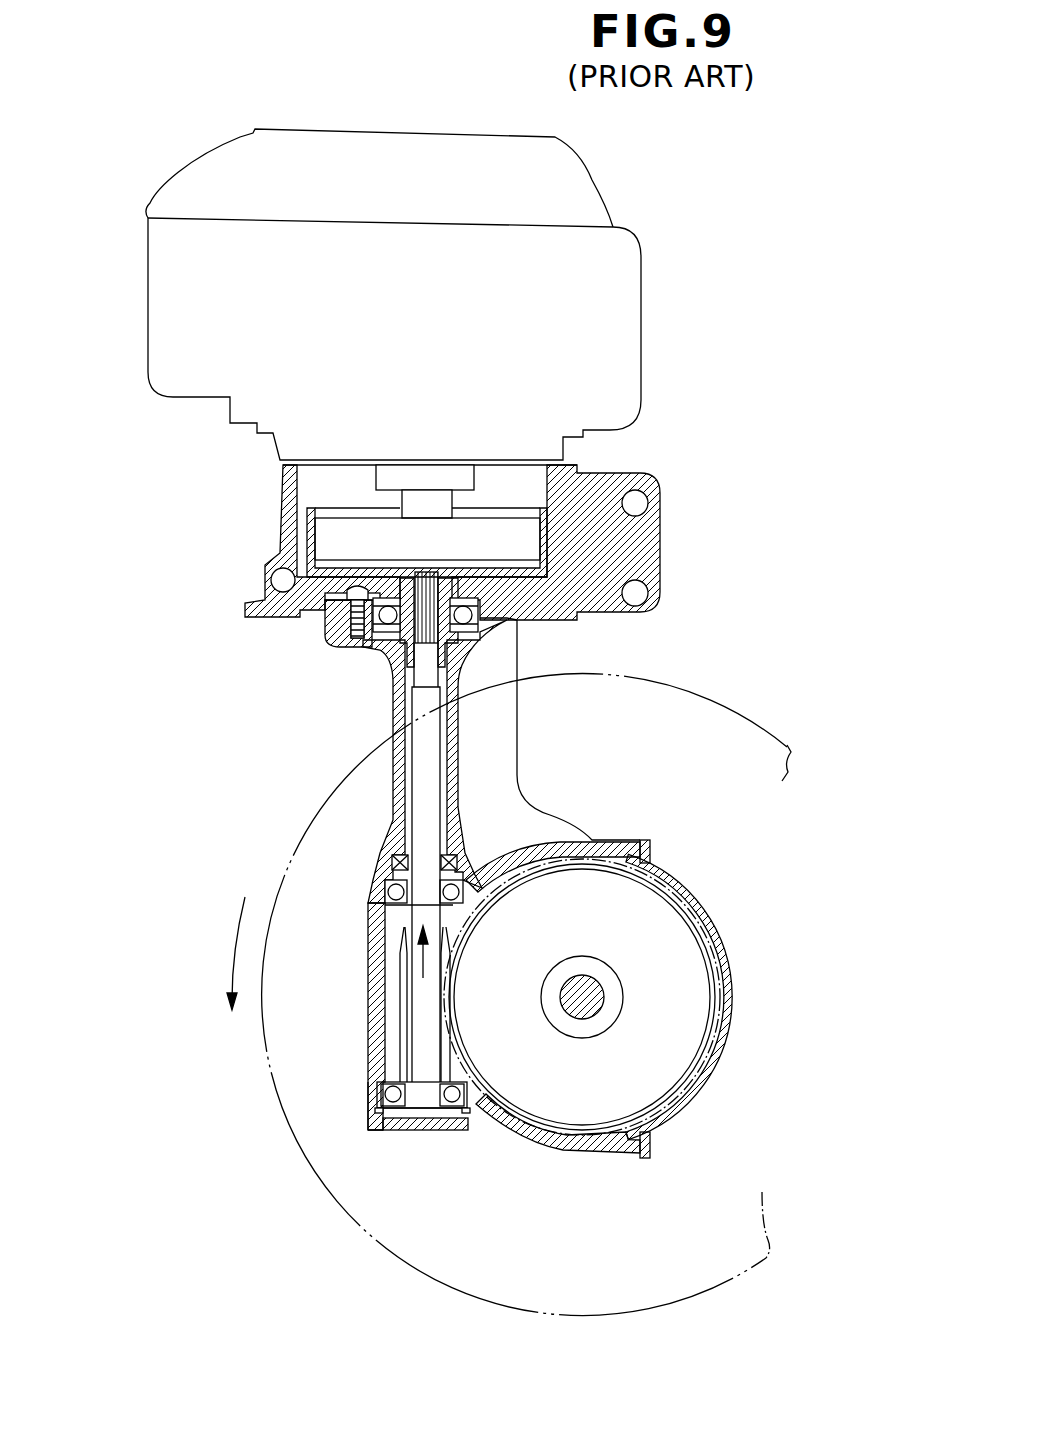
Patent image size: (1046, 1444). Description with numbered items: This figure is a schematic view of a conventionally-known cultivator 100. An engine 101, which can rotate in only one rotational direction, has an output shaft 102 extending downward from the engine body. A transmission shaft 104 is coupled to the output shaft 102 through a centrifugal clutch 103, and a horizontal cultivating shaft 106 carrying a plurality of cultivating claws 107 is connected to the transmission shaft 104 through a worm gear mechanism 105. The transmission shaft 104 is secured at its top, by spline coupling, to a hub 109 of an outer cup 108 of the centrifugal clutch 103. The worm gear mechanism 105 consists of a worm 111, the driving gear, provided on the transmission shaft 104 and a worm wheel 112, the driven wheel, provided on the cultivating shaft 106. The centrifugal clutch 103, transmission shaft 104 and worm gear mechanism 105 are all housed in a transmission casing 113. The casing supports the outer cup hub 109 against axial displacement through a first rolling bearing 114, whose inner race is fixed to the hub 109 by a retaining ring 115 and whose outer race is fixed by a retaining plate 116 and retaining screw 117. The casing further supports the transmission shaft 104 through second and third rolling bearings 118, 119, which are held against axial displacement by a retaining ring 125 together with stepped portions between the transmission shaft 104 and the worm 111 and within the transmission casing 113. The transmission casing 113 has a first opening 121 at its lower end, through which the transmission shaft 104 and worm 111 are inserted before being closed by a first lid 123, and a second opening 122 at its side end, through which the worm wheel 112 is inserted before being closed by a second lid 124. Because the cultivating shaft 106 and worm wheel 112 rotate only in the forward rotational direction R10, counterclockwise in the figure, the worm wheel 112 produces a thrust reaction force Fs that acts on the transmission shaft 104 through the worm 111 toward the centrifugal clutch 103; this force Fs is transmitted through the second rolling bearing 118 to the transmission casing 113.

The cultivator 100 is at (803, 210).
The engine 101 is at (635, 310).
The output shaft 102 is at (425, 500).
The centrifugal clutch 103 is at (567, 487).
The transmission shaft 104 is at (420, 767).
The worm gear mechanism 105 is at (393, 1003).
The cultivating shaft 106 is at (590, 995).
The cultivating claws 107 is at (770, 726).
The outer cup 108 is at (547, 577).
The hub 109 is at (517, 617).
The worm 111 is at (393, 1033).
The worm wheel 112 is at (697, 1028).
The transmission casing 113 is at (390, 827).
The first rolling bearing 114 is at (340, 627).
The retaining ring 115 is at (380, 650).
The retaining plate 116 is at (353, 590).
The retaining screw 117 is at (312, 557).
The second rolling bearing 118 is at (390, 893).
The third rolling bearing 119 is at (375, 1100).
The first opening 121 is at (420, 1118).
The second opening 122 is at (627, 1133).
The first lid 123 is at (455, 1130).
The second lid 124 is at (693, 1105).
The retaining ring 125 is at (390, 1125).
The forward rotational direction R10 is at (205, 953).
The thrust reaction force Fs is at (420, 957).